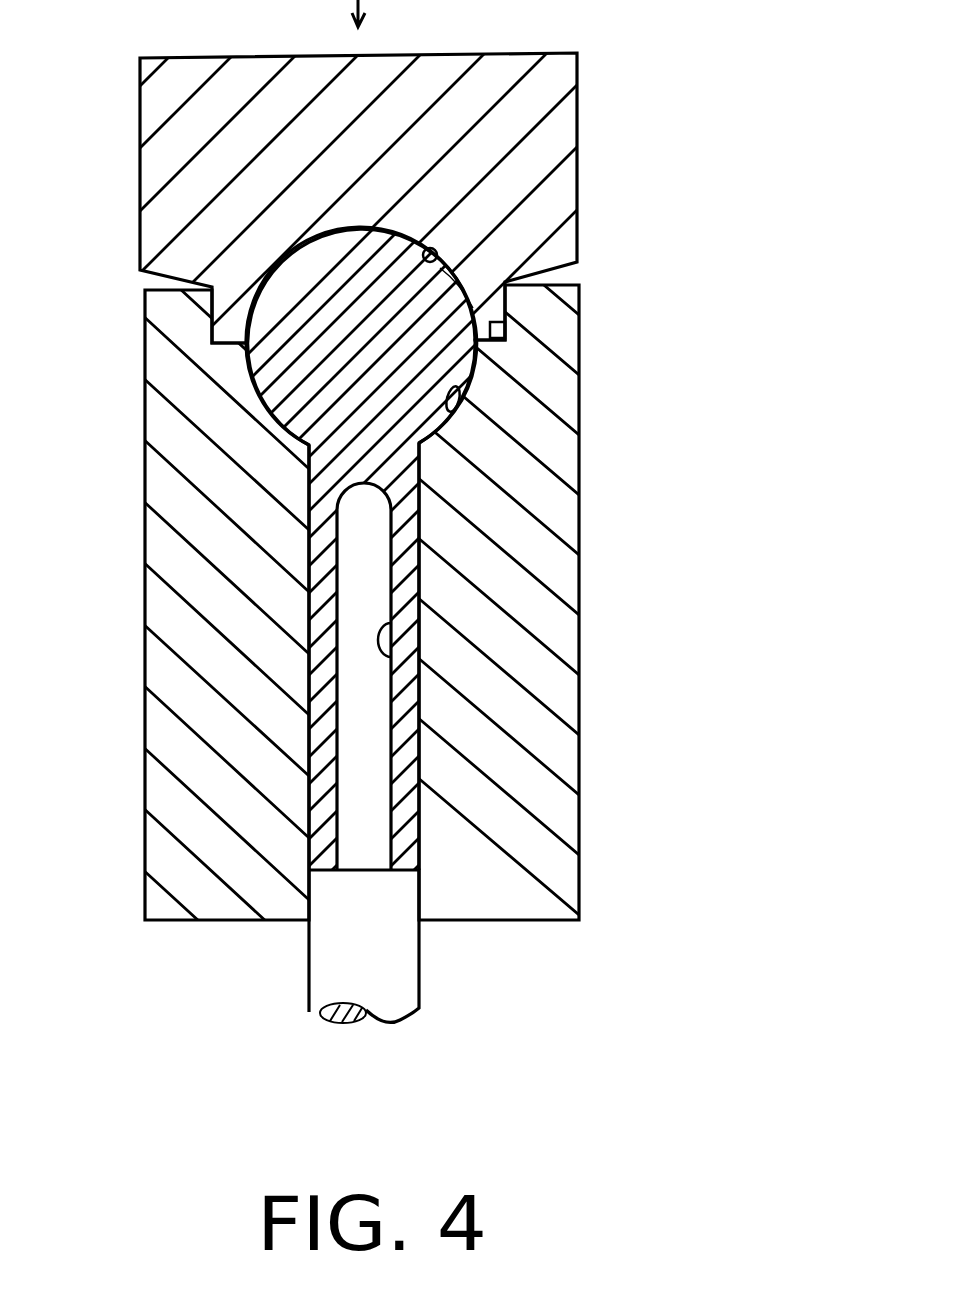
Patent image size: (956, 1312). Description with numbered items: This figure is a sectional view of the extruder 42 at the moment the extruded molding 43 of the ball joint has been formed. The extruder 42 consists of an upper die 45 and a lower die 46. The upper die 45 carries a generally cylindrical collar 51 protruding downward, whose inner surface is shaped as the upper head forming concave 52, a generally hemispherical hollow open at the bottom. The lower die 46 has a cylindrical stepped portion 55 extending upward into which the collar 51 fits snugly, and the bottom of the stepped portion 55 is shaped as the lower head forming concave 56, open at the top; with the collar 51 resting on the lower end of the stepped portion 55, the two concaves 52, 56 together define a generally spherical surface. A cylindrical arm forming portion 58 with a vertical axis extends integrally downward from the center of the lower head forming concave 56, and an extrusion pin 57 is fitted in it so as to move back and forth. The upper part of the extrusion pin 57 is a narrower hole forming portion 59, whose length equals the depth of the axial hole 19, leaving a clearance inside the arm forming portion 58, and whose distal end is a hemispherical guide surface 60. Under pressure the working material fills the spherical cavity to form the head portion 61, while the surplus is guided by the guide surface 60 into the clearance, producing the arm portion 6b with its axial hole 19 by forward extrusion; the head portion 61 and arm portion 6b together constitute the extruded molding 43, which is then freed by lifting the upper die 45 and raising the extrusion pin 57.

The extruder 42 is at (737, 242).
The extruded molding 43 is at (423, 476).
The upper die 45 is at (565, 160).
The lower die 46 is at (578, 866).
The collar 51 is at (505, 310).
The upper head forming concave 52 is at (424, 246).
The stepped portion 55 is at (473, 340).
The lower head forming concave 56 is at (455, 410).
The extrusion pin 57 is at (425, 972).
The arm forming portion 58 is at (421, 570).
The hole forming portion 59 is at (367, 732).
The guide surface 60 is at (363, 522).
The head portion 61 is at (473, 308).
The arm portion 6b is at (421, 607).
The axial hole 19 is at (421, 667).